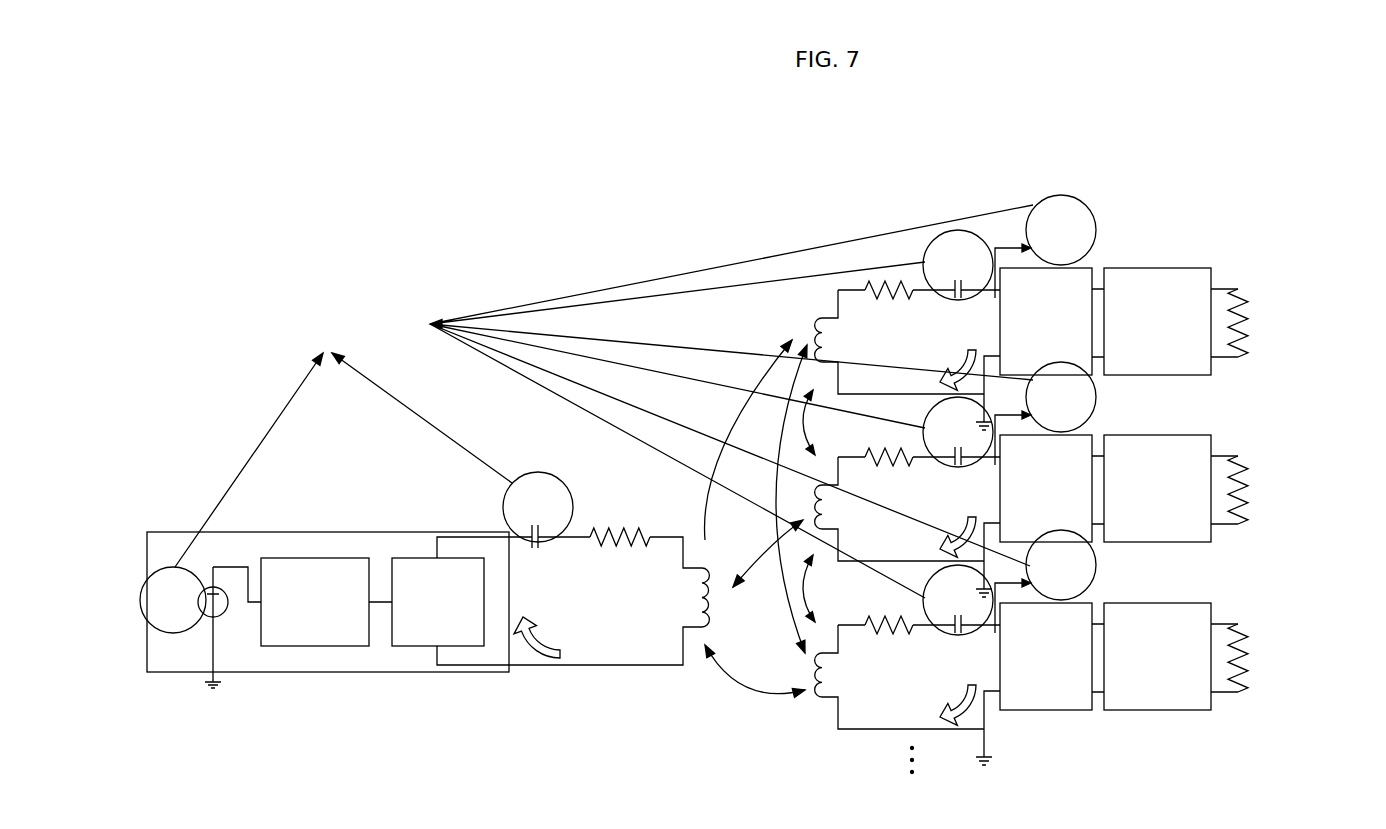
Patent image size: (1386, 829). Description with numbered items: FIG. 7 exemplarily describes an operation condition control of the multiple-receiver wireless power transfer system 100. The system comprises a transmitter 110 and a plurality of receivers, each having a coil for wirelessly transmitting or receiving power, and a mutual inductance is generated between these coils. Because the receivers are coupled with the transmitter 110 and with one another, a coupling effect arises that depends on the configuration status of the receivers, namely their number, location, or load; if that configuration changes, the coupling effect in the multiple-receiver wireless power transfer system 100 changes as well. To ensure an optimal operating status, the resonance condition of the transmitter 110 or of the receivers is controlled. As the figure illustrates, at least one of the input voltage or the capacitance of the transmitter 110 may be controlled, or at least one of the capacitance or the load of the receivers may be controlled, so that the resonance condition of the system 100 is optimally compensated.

The multiple-receiver wireless power transfer system 100 is at (545, 215).
The transmitter 110 is at (186, 490).